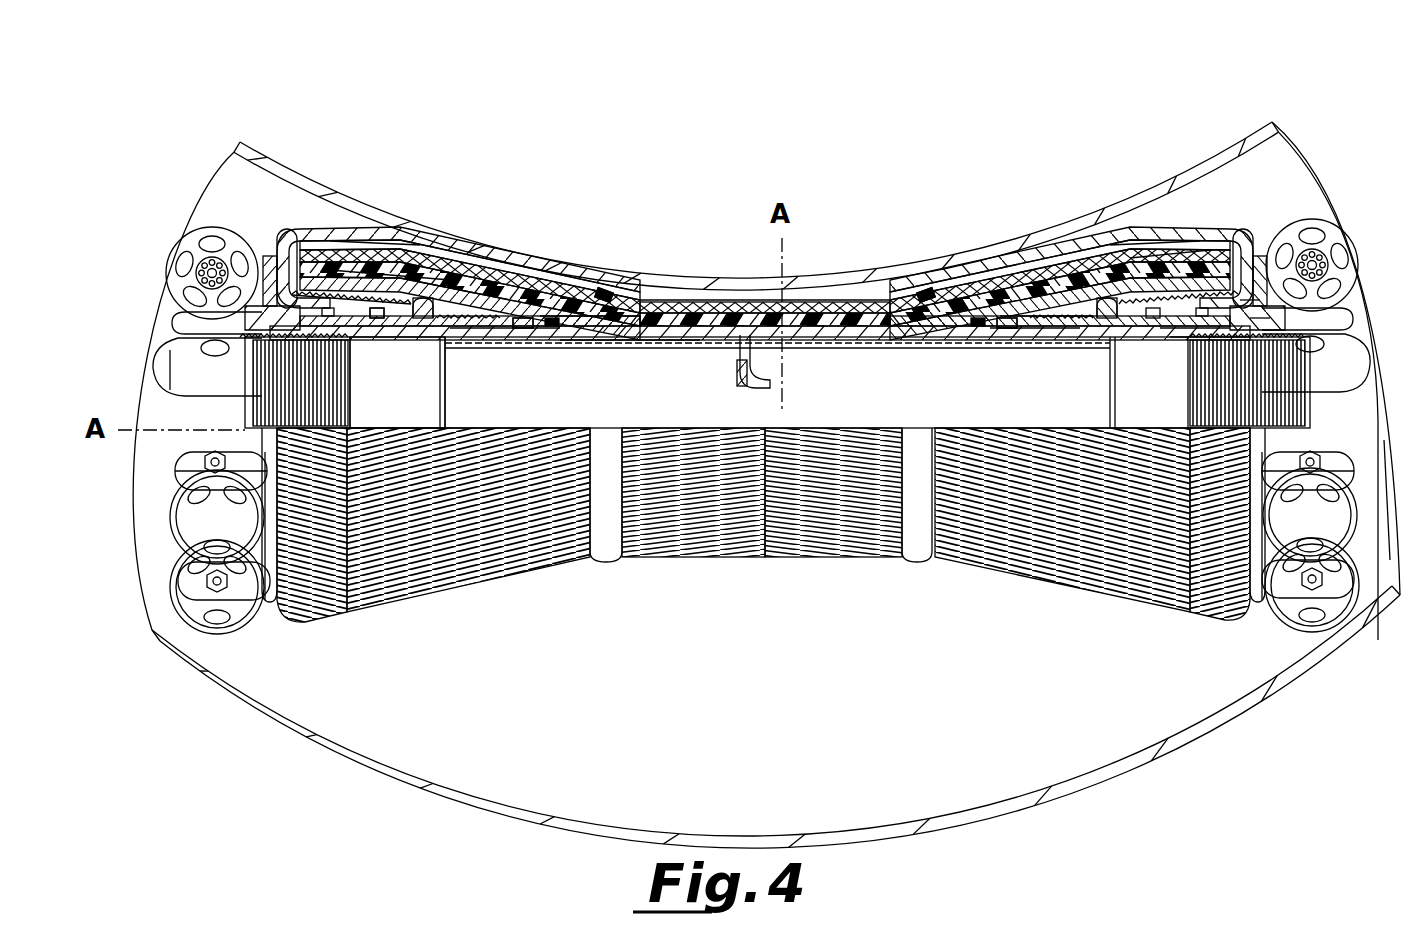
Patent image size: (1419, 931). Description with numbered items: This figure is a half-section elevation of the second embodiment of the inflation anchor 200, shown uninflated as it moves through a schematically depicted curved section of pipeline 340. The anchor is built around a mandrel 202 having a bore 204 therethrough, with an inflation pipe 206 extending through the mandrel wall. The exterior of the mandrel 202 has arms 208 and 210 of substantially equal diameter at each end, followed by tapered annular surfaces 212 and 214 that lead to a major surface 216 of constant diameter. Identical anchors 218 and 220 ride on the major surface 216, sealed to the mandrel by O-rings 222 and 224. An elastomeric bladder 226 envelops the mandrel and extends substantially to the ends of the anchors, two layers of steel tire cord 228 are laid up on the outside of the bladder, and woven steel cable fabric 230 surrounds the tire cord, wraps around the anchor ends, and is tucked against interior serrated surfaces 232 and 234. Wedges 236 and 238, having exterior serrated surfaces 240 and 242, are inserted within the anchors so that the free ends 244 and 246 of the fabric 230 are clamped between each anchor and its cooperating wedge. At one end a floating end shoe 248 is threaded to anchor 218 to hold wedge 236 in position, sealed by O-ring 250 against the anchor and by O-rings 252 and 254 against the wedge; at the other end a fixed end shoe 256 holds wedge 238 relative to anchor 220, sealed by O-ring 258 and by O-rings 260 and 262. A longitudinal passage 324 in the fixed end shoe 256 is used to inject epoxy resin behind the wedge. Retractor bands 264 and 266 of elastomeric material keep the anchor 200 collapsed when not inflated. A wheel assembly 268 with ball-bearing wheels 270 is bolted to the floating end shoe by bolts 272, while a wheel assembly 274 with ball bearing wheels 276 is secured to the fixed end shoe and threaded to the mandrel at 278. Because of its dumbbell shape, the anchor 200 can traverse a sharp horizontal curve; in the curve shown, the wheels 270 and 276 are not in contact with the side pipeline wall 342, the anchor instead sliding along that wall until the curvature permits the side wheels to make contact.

The inflation anchor 200 is at (1003, 632).
The mandrel 202 is at (733, 335).
The bore 204 is at (1152, 408).
The inflation pipe 206 is at (750, 372).
The arm 208 is at (172, 352).
The arm 210 is at (1258, 296).
The tapered annular surface 212 is at (384, 332).
The tapered annular surface 214 is at (1180, 338).
The major surface 216 is at (838, 335).
The anchor 218 is at (540, 322).
The anchor 220 is at (1040, 312).
The O-ring 222 is at (600, 324).
The O-ring 224 is at (1005, 316).
The elastomeric bladder 226 is at (520, 316).
The steel tire cord 228 is at (717, 318).
The woven steel cable fabric 230 is at (688, 560).
The interior serrated surface 232 is at (393, 268).
The interior serrated surface 234 is at (1150, 240).
The wedge 236 is at (345, 232).
The wedge 238 is at (1225, 262).
The exterior serrated surface 240 is at (410, 296).
The exterior serrated surface 242 is at (1180, 243).
The free end 244 is at (374, 243).
The free end 246 is at (1095, 300).
The floating end shoe 248 is at (436, 300).
The O-ring 250 is at (560, 312).
The O-ring 252 is at (310, 300).
The O-ring 254 is at (364, 326).
The fixed end shoe 256 is at (1268, 314).
The O-ring 258 is at (985, 300).
The O-ring 260 is at (1165, 330).
The O-ring 262 is at (1245, 255).
The retractor band 264 is at (610, 290).
The retractor band 266 is at (920, 290).
The wheel assembly 268 is at (176, 318).
The ball-bearing wheels 270 is at (170, 515).
The bolts 272 is at (298, 230).
The wheel assembly 274 is at (1372, 565).
The ball bearing wheels 276 is at (1333, 610).
The threaded connection 278 is at (1290, 345).
The longitudinal passage 324 is at (1330, 230).
The pipeline 340 is at (362, 758).
The side pipeline wall 342 is at (262, 190).